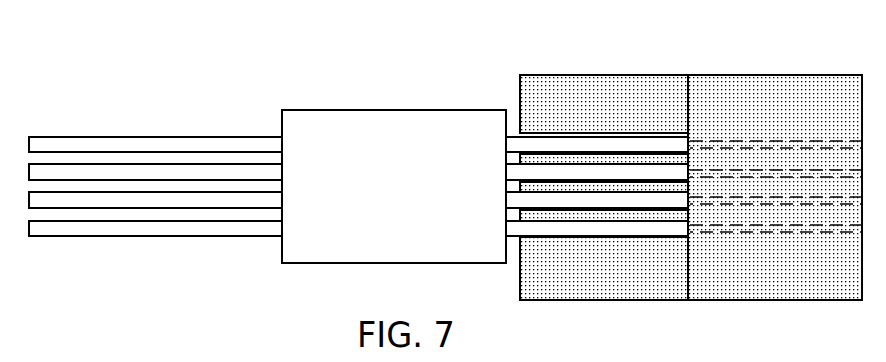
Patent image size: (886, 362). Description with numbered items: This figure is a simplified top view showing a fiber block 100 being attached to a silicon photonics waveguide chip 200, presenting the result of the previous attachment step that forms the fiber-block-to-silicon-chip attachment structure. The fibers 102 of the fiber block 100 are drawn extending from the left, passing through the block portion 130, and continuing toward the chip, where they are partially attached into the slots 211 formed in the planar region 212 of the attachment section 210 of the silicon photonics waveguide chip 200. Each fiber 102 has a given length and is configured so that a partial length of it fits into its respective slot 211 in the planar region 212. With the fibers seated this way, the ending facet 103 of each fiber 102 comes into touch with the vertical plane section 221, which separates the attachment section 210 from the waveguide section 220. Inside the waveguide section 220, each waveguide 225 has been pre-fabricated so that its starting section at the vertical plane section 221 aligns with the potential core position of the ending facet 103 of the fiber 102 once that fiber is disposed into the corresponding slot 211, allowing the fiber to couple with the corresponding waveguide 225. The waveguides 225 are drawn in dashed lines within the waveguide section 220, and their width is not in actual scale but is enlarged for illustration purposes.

The fiber block 100 is at (262, 80).
The fibers 102 is at (617, 229).
The ending facet 103 is at (689, 230).
The fiber holder / boot 130 is at (366, 110).
The silicon photonics waveguide chip 200 is at (728, 55).
The attachment section 210 is at (585, 300).
The slots 211 is at (540, 238).
The planar region 212 is at (621, 123).
The waveguide section 220 is at (755, 76).
The vertical plane section 221 is at (688, 108).
The waveguide 225 is at (800, 231).